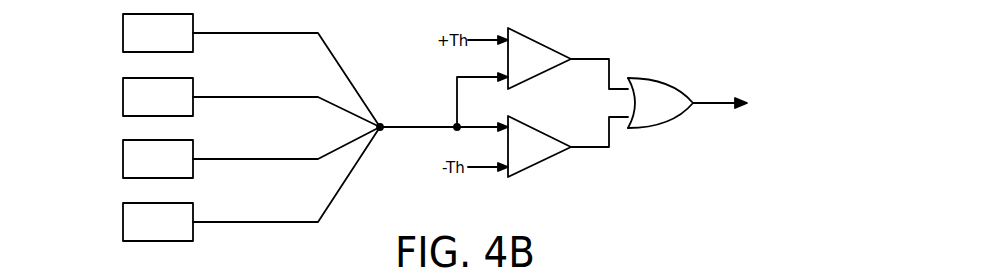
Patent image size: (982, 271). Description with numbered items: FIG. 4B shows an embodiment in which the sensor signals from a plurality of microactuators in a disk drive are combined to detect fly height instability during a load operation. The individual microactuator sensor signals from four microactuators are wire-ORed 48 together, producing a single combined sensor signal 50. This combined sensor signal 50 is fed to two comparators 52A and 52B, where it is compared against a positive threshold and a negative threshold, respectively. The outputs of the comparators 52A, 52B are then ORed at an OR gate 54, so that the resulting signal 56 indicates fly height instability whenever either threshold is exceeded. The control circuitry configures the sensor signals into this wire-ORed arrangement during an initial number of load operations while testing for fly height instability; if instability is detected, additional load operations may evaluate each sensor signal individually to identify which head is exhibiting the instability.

The wire-OR 48 is at (392, 138).
The combined sensor signal 50 is at (411, 127).
The comparator 52A is at (546, 39).
The comparator 52B is at (543, 123).
The OR gate 54 is at (637, 78).
The resulting signal 56 is at (714, 102).